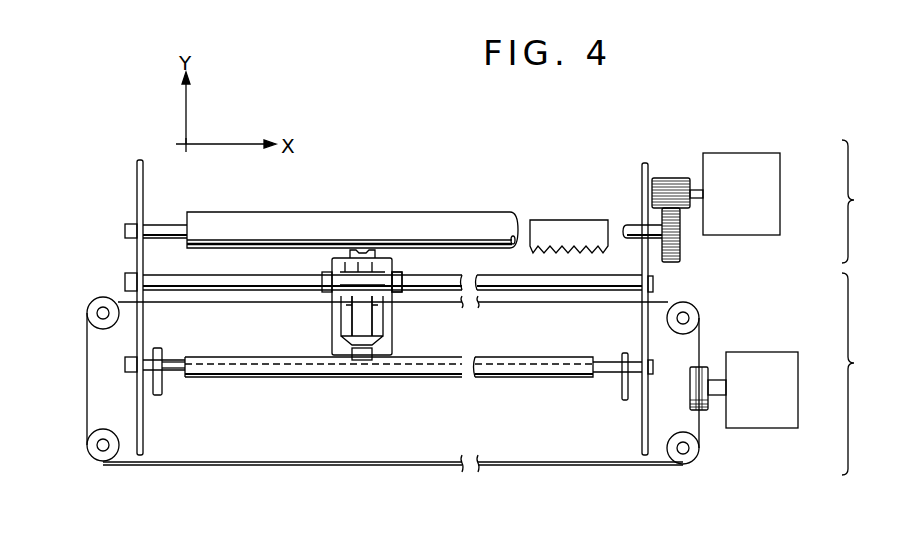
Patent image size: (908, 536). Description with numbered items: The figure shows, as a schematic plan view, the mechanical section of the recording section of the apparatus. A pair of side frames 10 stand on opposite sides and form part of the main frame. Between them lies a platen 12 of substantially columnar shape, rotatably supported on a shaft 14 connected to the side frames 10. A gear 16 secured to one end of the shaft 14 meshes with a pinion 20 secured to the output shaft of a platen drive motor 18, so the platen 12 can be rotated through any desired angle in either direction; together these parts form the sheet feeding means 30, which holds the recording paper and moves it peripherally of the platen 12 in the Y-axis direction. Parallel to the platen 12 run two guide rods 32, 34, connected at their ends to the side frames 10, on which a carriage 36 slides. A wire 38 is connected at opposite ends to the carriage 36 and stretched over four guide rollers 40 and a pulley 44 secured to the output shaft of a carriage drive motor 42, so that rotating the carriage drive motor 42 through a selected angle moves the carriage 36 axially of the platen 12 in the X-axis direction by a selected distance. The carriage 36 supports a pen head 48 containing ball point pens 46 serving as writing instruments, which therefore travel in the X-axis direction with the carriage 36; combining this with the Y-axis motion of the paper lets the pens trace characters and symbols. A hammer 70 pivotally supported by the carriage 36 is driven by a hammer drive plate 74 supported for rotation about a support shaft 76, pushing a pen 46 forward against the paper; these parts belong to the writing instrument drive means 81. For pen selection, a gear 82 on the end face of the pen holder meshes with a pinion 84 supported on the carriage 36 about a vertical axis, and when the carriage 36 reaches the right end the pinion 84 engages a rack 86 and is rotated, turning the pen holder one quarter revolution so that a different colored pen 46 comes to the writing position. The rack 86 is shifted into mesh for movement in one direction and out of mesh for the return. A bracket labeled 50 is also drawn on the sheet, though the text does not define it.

The side frames 10 is at (137, 172).
The platen 12 is at (272, 212).
The shaft 14 is at (165, 225).
The gear 16 is at (680, 238).
The platen drive motor 18 is at (768, 183).
The pinion 20 is at (672, 188).
The sheet feeding means 30 is at (866, 201).
The guide rod 32 is at (162, 273).
The guide rod 34 is at (153, 350).
The carriage 36 is at (332, 330).
The wire 38 is at (242, 303).
The guide rollers 40 is at (96, 300).
The carriage drive motor 42 is at (780, 405).
The pulley 44 is at (688, 387).
The ball point pens 46 is at (367, 327).
The pen head 48 is at (402, 312).
The carriage drive mechanism 50 is at (867, 374).
The hammer 70 is at (363, 360).
The hammer drive plate 74 is at (540, 358).
The support shaft 76 is at (170, 372).
The writing instrument drive means 81 is at (270, 384).
The gear 82 is at (403, 277).
The pinion 84 is at (370, 247).
The rack 86 is at (570, 228).